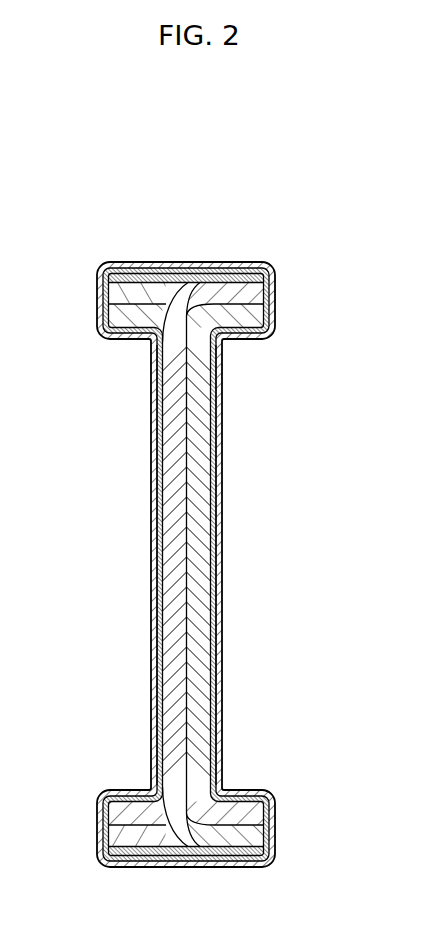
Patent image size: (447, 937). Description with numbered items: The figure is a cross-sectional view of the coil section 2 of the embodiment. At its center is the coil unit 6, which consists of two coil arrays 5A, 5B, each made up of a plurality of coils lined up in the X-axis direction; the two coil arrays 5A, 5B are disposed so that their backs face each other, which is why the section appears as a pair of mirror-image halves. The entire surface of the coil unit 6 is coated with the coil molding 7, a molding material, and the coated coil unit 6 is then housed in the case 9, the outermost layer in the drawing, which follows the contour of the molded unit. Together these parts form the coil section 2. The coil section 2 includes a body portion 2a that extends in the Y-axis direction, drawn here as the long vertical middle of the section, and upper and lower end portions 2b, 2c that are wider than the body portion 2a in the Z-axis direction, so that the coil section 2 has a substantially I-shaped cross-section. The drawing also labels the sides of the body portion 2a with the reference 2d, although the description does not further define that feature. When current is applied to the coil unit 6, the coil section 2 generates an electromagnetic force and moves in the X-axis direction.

The coil section 2 is at (333, 231).
The body portion 2a is at (149, 440).
The upper end portion 2b is at (244, 346).
The lower end portion 2c is at (243, 788).
The web side surface 2d is at (160, 516).
The coil array 5A is at (223, 286).
The coil array 5B is at (135, 283).
The coil unit 6 is at (164, 277).
The coil molding 7 is at (246, 266).
The case 9 is at (144, 266).